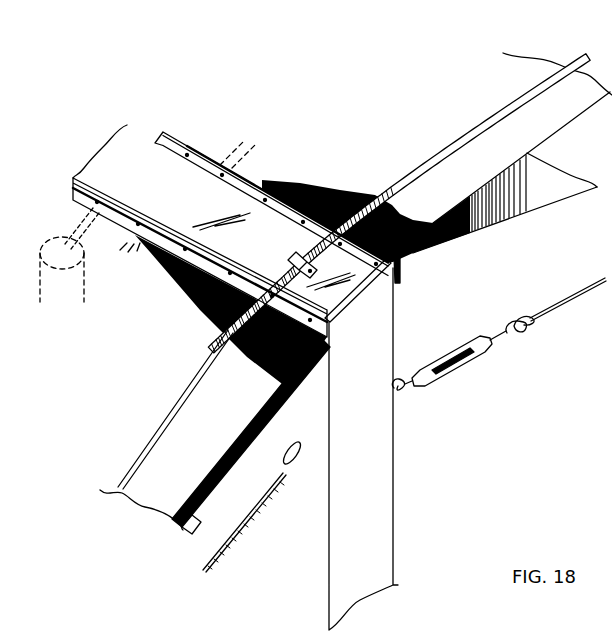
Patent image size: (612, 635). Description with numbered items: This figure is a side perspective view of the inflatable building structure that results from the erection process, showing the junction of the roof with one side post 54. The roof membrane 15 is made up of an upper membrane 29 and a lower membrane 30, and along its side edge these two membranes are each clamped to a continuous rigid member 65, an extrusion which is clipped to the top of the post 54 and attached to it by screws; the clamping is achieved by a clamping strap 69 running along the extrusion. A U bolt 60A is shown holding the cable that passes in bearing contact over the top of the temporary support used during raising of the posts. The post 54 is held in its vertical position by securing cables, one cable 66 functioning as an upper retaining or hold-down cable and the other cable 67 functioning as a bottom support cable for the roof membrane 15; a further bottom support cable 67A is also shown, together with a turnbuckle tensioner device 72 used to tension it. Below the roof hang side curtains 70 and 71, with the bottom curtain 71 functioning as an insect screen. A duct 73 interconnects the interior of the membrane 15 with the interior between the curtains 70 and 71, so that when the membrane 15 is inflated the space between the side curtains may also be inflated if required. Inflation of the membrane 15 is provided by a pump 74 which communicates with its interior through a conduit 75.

The roof membrane 15 is at (440, 96).
The upper membrane 29 is at (523, 136).
The lower membrane 30 is at (557, 197).
The side post 54 is at (368, 503).
The U bolt 60A is at (300, 264).
The continuous rigid member 65 is at (332, 300).
The upper retaining cable 66 is at (437, 150).
The bottom support cable 67 is at (215, 552).
The bottom support cable 67A is at (576, 300).
The clamping strap 69 is at (243, 170).
The side curtain 70 is at (217, 441).
The bottom curtain 71 is at (200, 530).
The turnbuckle tensioner device 72 is at (448, 350).
The duct 73 is at (222, 152).
The pump 74 is at (80, 302).
The conduit 75 is at (74, 218).